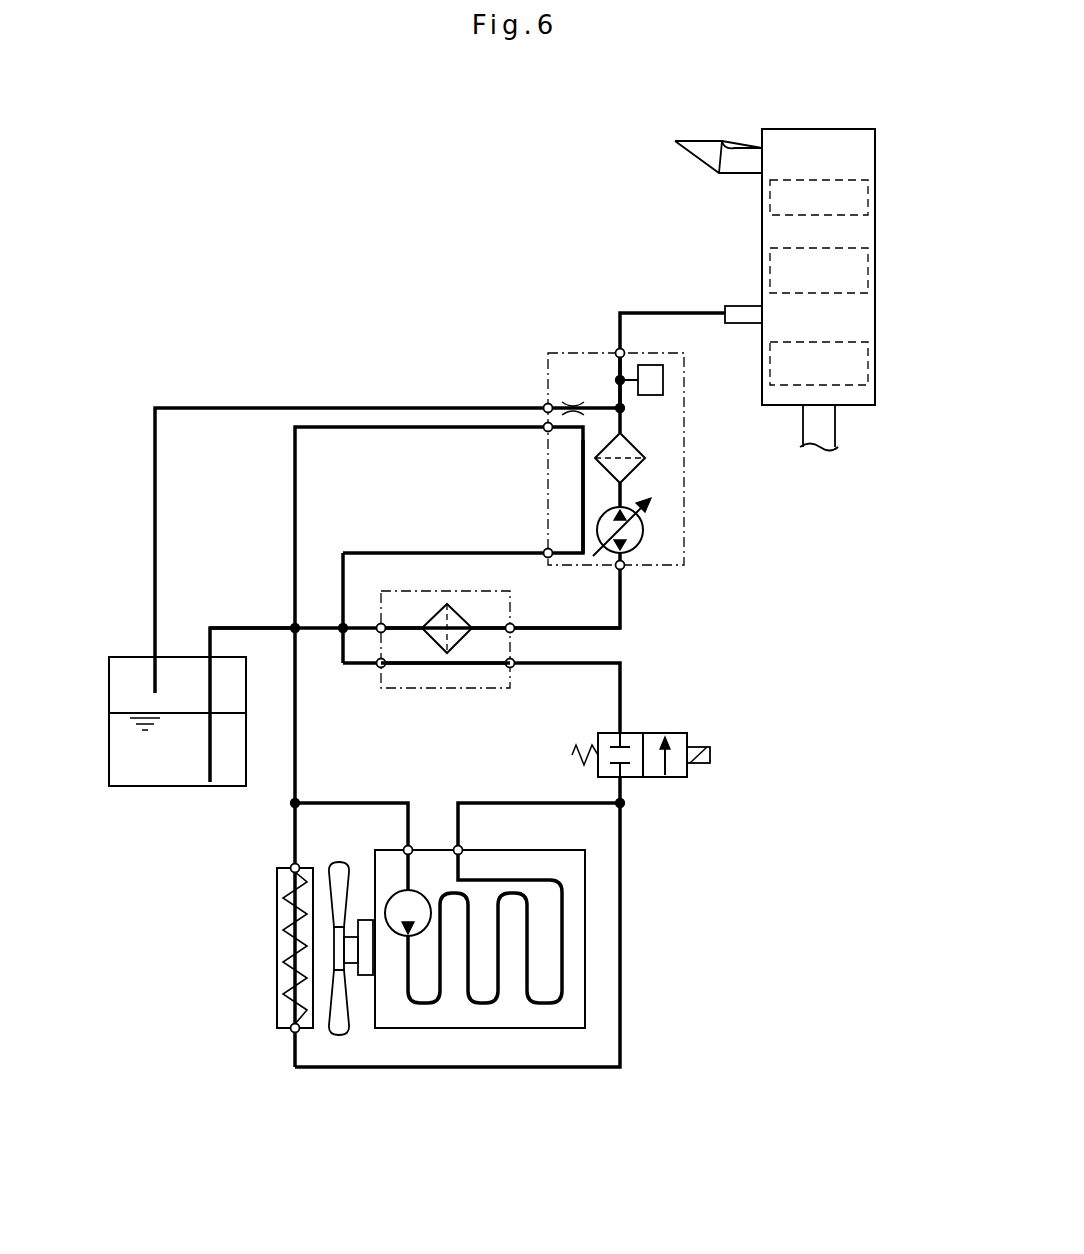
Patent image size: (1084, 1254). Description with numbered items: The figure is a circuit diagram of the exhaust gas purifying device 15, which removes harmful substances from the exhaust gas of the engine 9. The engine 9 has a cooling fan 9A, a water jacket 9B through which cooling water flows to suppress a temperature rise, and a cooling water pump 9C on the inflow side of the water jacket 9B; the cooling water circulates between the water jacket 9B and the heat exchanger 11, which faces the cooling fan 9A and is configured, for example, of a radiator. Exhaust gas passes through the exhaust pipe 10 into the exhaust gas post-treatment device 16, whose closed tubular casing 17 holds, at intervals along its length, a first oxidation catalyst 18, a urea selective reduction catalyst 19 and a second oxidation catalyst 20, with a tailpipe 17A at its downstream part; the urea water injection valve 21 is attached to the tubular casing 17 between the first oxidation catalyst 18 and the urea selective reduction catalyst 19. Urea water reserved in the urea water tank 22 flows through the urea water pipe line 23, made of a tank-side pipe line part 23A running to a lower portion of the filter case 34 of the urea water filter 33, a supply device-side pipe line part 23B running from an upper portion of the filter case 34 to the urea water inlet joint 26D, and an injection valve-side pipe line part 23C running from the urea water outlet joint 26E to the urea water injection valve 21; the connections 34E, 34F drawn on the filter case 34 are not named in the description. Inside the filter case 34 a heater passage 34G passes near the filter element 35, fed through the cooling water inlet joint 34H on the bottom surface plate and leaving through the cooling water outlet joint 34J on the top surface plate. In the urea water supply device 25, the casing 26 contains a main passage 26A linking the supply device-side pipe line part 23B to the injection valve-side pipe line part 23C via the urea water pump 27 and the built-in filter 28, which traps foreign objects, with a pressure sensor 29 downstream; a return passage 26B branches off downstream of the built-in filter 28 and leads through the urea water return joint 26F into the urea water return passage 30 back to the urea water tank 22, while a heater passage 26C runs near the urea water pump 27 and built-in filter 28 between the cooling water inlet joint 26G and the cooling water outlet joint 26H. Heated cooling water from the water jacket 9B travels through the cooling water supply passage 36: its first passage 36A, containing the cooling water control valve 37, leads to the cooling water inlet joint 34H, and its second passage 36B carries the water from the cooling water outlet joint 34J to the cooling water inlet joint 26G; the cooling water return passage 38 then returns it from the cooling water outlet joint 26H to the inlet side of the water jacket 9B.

The exhaust gas purifying device 15 is at (396, 340).
The urea water return passage 30 is at (215, 407).
The cooling water return passage 38 is at (294, 488).
The cooling water supply passage 36 is at (622, 703).
The first passage 36A is at (622, 672).
The second passage 36B is at (420, 548).
The urea water pipe line 23 is at (265, 626).
The tank-side pipe line part 23A is at (228, 626).
The supply device-side pipe line part 23B is at (622, 615).
The injection valve-side pipe line part 23C is at (660, 312).
The urea water tank 22 is at (162, 787).
The casing 26 is at (684, 508).
The main passage 26A is at (622, 492).
The return passage 26B is at (600, 406).
The heater passage 26C is at (581, 483).
The urea water inlet joint 26D is at (623, 568).
The urea water outlet joint 26E is at (619, 351).
The urea water return joint 26F is at (546, 406).
The cooling water inlet joint 26G is at (546, 551).
The cooling water outlet joint 26H is at (546, 430).
The urea water pump 27 is at (640, 535).
The built-in filter 28 is at (640, 450).
The pressure sensor 29 is at (655, 378).
The urea water supply device 25 is at (544, 348).
The urea water filter 33 is at (420, 698).
The filter case 34 is at (487, 690).
The port 34E is at (376, 623).
The port 34F is at (514, 624).
The heater passage 34G is at (463, 666).
The cooling water inlet joint 34H is at (514, 667).
The cooling water outlet joint 34J is at (378, 667).
The filter element 35 is at (437, 620).
The cooling water control valve 37 is at (672, 779).
The heat exchanger 11 is at (276, 938).
The engine 9 is at (451, 1013).
The cooling fan 9A is at (338, 1026).
The water jacket 9B is at (508, 1005).
The cooling water pump 9C is at (398, 925).
The exhaust gas post-treatment device 16 is at (797, 118).
The tubular casing 17 is at (828, 143).
The tailpipe 17A is at (702, 148).
The first oxidation catalyst 18 is at (840, 370).
The urea selective reduction catalyst 19 is at (773, 263).
The second oxidation catalyst 20 is at (785, 198).
The urea water injection valve 21 is at (742, 306).
The exhaust pipe 10 is at (820, 450).